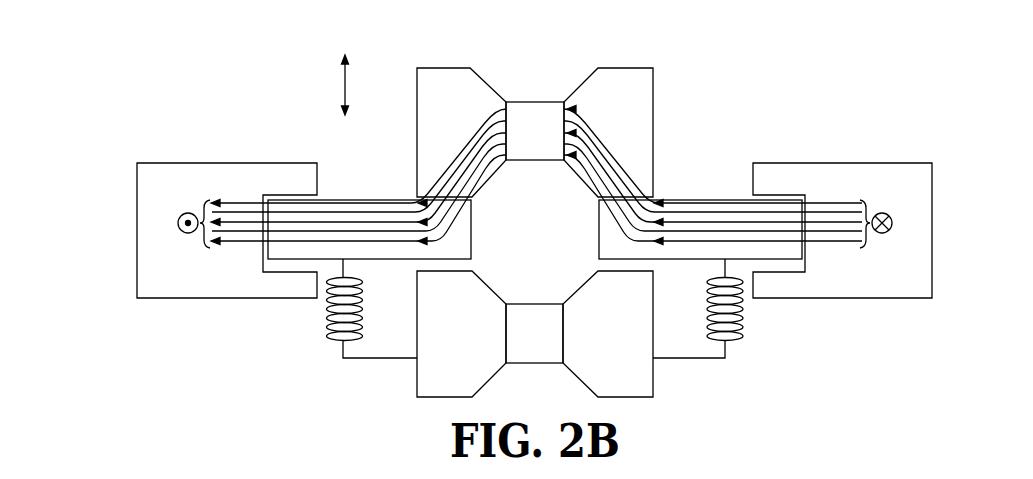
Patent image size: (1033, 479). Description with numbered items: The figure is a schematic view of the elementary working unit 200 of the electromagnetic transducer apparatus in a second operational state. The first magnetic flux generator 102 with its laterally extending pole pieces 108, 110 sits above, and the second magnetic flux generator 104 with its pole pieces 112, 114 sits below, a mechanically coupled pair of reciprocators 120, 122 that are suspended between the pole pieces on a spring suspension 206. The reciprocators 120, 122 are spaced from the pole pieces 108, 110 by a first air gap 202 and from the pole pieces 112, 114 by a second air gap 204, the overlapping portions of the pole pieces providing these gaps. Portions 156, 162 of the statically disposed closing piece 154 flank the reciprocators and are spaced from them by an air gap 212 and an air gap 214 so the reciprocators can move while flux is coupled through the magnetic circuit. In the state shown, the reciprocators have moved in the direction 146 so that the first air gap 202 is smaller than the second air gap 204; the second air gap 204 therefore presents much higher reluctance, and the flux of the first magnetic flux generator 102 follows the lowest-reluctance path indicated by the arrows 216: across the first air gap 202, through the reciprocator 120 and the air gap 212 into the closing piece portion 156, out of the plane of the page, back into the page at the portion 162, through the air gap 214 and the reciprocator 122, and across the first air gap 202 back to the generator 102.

The elementary working unit 200 is at (134, 100).
The first magnetic flux generator 102 is at (532, 100).
The second magnetic flux generator 104 is at (530, 302).
The pole piece 108 is at (433, 97).
The pole piece 110 is at (633, 100).
The pole piece 112 is at (642, 363).
The pole piece 114 is at (420, 372).
The reciprocator 120 is at (340, 199).
The reciprocator 122 is at (730, 199).
The direction of movement 146 is at (343, 84).
The closing piece 154 is at (125, 228).
The closing piece portion 156 is at (228, 163).
The closing piece portion 162 is at (860, 163).
The first air gap 202 is at (416, 197).
The second air gap 204 is at (417, 263).
The spring suspension 206 is at (326, 321).
The air gap 212 is at (266, 261).
The air gap 214 is at (804, 261).
The magnetic flux 216 is at (477, 158).